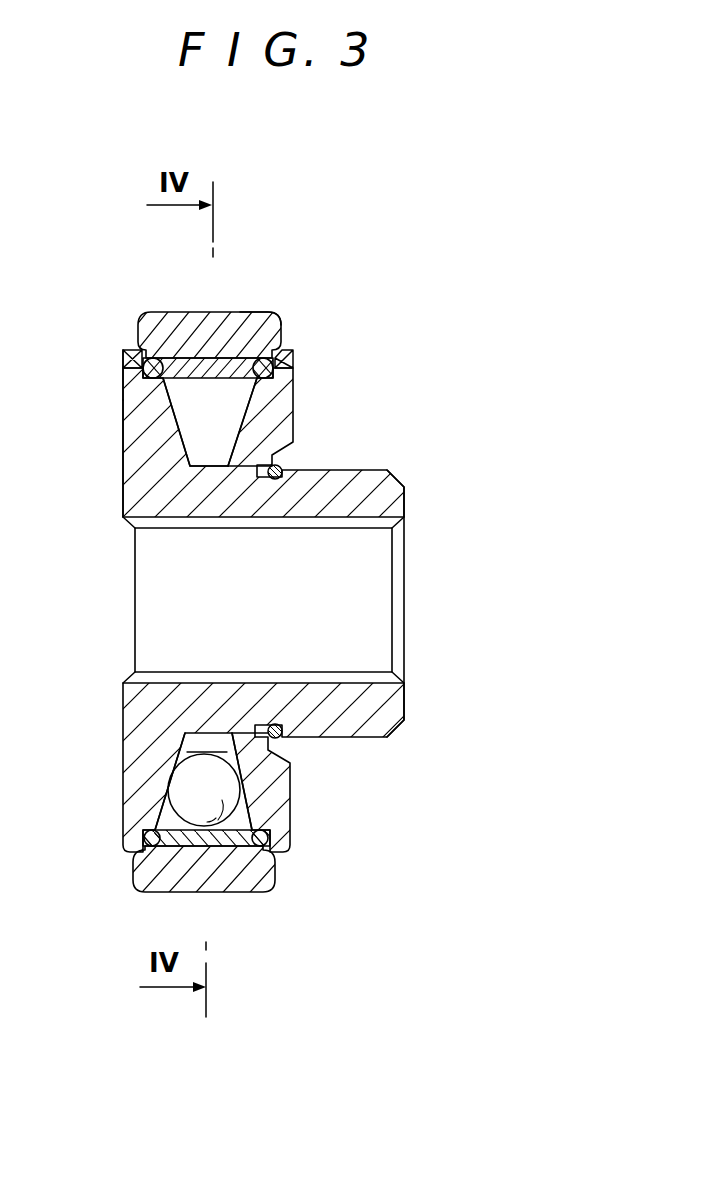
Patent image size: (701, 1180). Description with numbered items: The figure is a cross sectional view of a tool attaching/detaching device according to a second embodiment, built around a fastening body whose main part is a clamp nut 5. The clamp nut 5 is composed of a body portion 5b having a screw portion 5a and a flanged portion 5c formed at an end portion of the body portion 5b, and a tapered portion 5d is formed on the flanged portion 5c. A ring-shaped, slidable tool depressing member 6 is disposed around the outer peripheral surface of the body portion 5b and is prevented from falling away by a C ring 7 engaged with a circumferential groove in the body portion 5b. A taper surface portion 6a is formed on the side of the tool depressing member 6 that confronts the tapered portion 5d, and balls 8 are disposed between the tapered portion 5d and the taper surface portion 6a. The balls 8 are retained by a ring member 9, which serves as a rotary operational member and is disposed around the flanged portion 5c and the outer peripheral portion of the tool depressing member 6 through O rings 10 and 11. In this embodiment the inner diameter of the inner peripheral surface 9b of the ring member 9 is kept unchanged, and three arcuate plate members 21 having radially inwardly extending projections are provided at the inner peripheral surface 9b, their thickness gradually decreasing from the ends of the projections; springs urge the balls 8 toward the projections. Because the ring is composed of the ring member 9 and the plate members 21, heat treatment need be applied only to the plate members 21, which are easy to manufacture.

The clamp nut 5 is at (148, 487).
The screw portion 5a is at (160, 527).
The body portion 5b is at (377, 492).
The flanged portion 5c is at (130, 423).
The tapered portion 5d is at (160, 397).
The tool depressing member 6 is at (283, 427).
The taper surface portion 6a is at (238, 402).
The C ring 7 is at (287, 735).
The balls 8 is at (158, 885).
The ring member 9 is at (245, 313).
The inner peripheral surface 9b is at (270, 313).
The O ring 10 is at (130, 352).
The O ring 11 is at (277, 368).
The arcuate plate members 21 is at (292, 349).